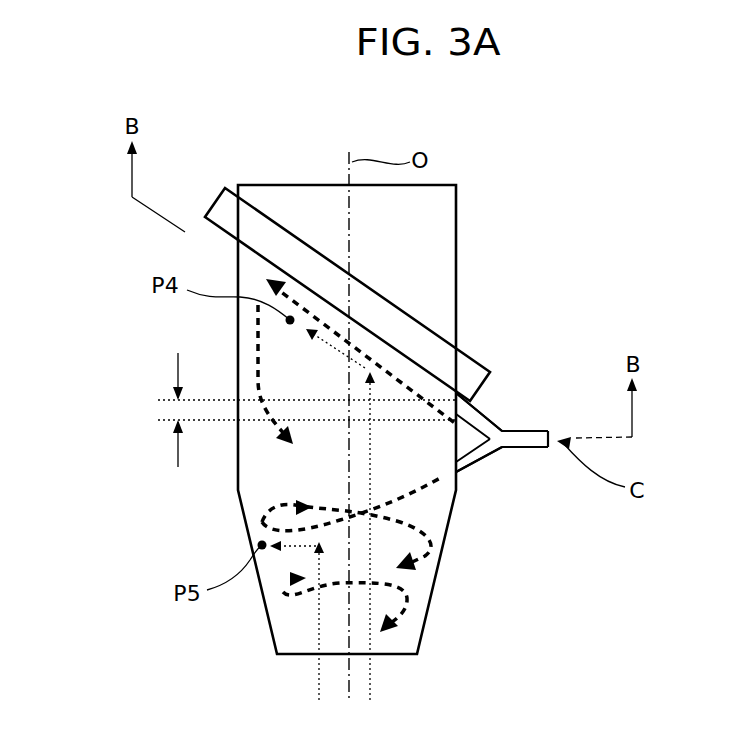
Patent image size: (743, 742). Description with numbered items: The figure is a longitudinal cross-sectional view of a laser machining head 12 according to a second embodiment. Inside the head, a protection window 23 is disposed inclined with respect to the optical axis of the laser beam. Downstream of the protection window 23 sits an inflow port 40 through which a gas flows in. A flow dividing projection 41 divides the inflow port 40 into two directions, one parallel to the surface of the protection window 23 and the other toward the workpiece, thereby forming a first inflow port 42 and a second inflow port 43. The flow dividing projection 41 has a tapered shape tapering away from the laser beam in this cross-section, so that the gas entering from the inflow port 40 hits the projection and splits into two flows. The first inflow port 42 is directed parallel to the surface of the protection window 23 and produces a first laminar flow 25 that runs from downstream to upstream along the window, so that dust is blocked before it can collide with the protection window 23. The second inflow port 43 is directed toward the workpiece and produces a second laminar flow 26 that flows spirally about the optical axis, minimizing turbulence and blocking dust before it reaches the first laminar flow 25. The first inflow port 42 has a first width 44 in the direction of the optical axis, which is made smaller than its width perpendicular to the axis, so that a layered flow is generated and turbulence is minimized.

The laser machining head 12 is at (595, 170).
The protection window 23 is at (430, 324).
The first laminar flow 25 is at (320, 316).
The second laminar flow 26 is at (424, 557).
The inflow port 40 is at (521, 430).
The flow dividing projection 41 is at (466, 444).
The first inflow port 42 is at (478, 416).
The second inflow port 43 is at (470, 460).
The first width 44 is at (176, 380).